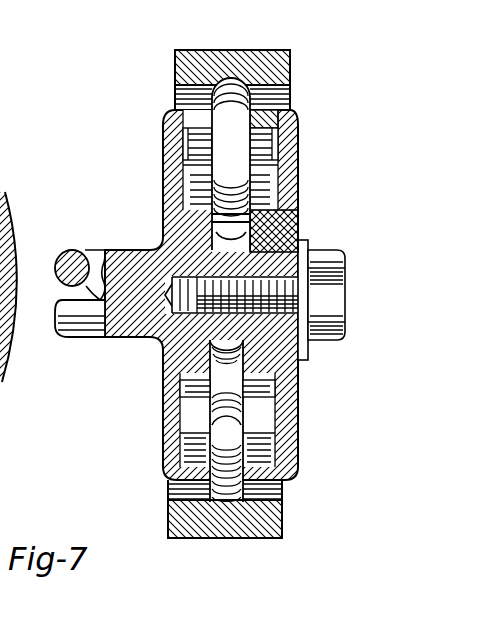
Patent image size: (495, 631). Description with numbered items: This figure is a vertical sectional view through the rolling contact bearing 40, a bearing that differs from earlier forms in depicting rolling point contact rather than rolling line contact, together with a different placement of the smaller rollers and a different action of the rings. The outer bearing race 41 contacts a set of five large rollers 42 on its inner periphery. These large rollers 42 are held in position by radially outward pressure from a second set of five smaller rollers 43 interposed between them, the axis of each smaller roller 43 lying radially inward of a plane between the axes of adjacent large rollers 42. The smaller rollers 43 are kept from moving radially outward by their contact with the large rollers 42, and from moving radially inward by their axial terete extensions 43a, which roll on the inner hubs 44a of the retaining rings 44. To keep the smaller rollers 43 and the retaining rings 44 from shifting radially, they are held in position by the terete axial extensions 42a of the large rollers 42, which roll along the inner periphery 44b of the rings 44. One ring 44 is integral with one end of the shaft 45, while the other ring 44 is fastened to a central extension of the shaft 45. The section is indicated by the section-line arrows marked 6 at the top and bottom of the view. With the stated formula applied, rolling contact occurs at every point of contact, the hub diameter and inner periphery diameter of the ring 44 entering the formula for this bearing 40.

The rolling contact bearing 40 is at (112, 80).
The outer bearing race 41 is at (290, 72).
The large rollers 42 is at (230, 143).
The terete axial extensions of rollers 42 42a is at (265, 147).
The smaller rollers 43 is at (226, 421).
The axial terete extensions 43a is at (253, 383).
The retaining rings 44 is at (197, 117).
The inner hubs 44a is at (262, 210).
The inner periphery of rings 44 44b is at (263, 128).
The shaft 45 is at (100, 225).
The section line 6- 6 is at (233, 50).